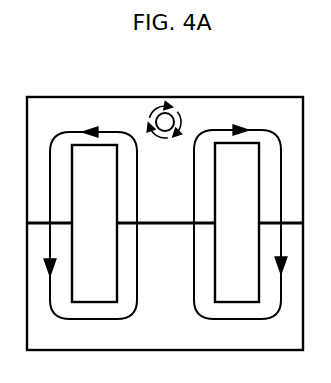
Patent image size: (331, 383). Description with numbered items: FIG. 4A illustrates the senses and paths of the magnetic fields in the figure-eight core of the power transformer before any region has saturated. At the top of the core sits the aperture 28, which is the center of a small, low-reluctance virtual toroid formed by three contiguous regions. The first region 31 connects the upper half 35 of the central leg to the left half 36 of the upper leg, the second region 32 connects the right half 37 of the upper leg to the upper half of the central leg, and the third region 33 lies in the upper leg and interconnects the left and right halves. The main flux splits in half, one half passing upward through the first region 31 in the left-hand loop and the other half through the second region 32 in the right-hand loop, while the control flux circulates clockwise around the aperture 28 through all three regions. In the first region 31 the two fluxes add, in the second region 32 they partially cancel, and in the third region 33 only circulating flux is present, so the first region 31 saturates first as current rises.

The aperture 28 is at (150, 109).
The first region 31 is at (141, 134).
The second region 32 is at (192, 128).
The third region 33 is at (177, 108).
The upper half of the central leg 35 is at (163, 153).
The left half of the upper leg 36 is at (90, 118).
The right half of the upper leg 37 is at (227, 118).